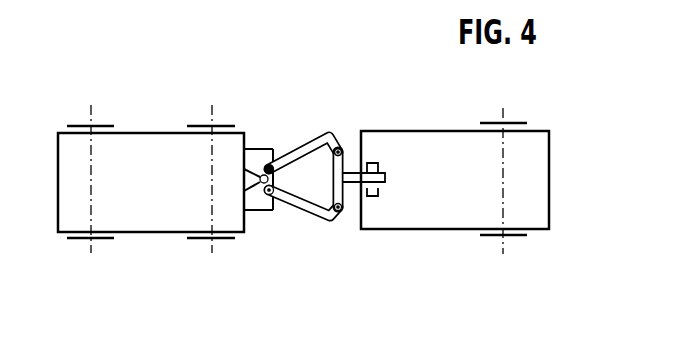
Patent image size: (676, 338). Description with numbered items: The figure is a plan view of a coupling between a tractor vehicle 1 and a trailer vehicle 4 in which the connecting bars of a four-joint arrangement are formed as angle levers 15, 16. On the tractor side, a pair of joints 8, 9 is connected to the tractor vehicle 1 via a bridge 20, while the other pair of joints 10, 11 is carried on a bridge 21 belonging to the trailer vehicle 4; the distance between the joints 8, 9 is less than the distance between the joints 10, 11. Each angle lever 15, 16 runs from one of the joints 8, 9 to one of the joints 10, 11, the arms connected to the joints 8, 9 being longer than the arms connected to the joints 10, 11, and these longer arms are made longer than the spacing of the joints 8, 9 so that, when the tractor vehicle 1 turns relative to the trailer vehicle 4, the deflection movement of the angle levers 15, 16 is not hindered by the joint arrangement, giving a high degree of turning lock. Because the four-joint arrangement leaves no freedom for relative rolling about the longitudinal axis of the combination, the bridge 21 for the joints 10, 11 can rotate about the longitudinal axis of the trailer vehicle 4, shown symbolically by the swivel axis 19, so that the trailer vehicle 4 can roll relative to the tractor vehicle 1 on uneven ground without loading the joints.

The tractor vehicle 1 is at (138, 147).
The trailer vehicle 4 is at (537, 143).
The joint 8 is at (271, 163).
The joint 9 is at (272, 198).
The joint 10 is at (342, 150).
The joint 11 is at (337, 218).
The angle lever 15 is at (302, 146).
The angle lever 16 is at (316, 227).
The swivel axis 19 is at (386, 172).
The bridge 20 is at (260, 200).
The bridge 21 is at (347, 157).